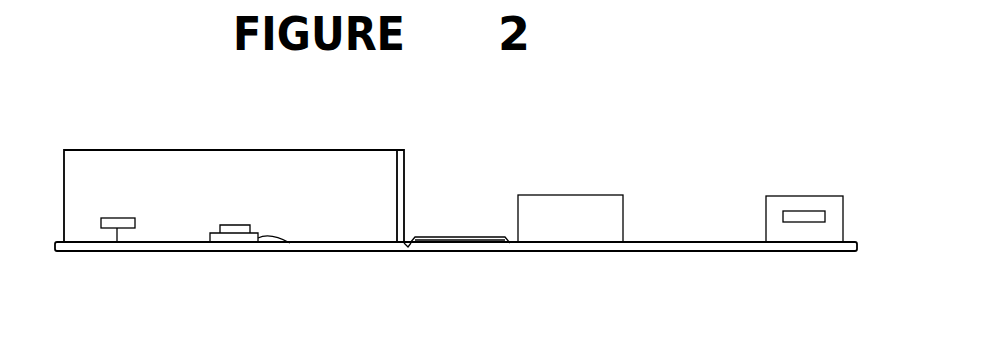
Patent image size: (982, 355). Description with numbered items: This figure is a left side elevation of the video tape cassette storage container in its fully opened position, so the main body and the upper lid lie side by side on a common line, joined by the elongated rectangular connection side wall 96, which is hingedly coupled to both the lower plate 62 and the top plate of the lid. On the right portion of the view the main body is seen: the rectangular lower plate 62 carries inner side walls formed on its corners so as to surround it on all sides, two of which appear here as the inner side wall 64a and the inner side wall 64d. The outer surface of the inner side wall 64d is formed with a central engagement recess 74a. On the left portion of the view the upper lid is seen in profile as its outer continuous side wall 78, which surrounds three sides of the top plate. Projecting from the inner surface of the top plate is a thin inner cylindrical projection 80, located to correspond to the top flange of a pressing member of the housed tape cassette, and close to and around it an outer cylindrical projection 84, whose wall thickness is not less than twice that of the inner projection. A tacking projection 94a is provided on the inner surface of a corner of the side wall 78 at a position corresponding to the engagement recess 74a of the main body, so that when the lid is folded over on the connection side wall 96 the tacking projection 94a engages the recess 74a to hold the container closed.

The lower plate 62 is at (690, 250).
The inner side wall 64a is at (567, 225).
The inner side wall 64d is at (793, 200).
The engagement recess 74a is at (795, 222).
The outer continuous side wall 78 is at (315, 183).
The cylindrical projection 80 is at (227, 225).
The cylindrical projection 84 is at (290, 243).
The tacking projection 94a is at (118, 252).
The connection side wall 96 is at (458, 247).